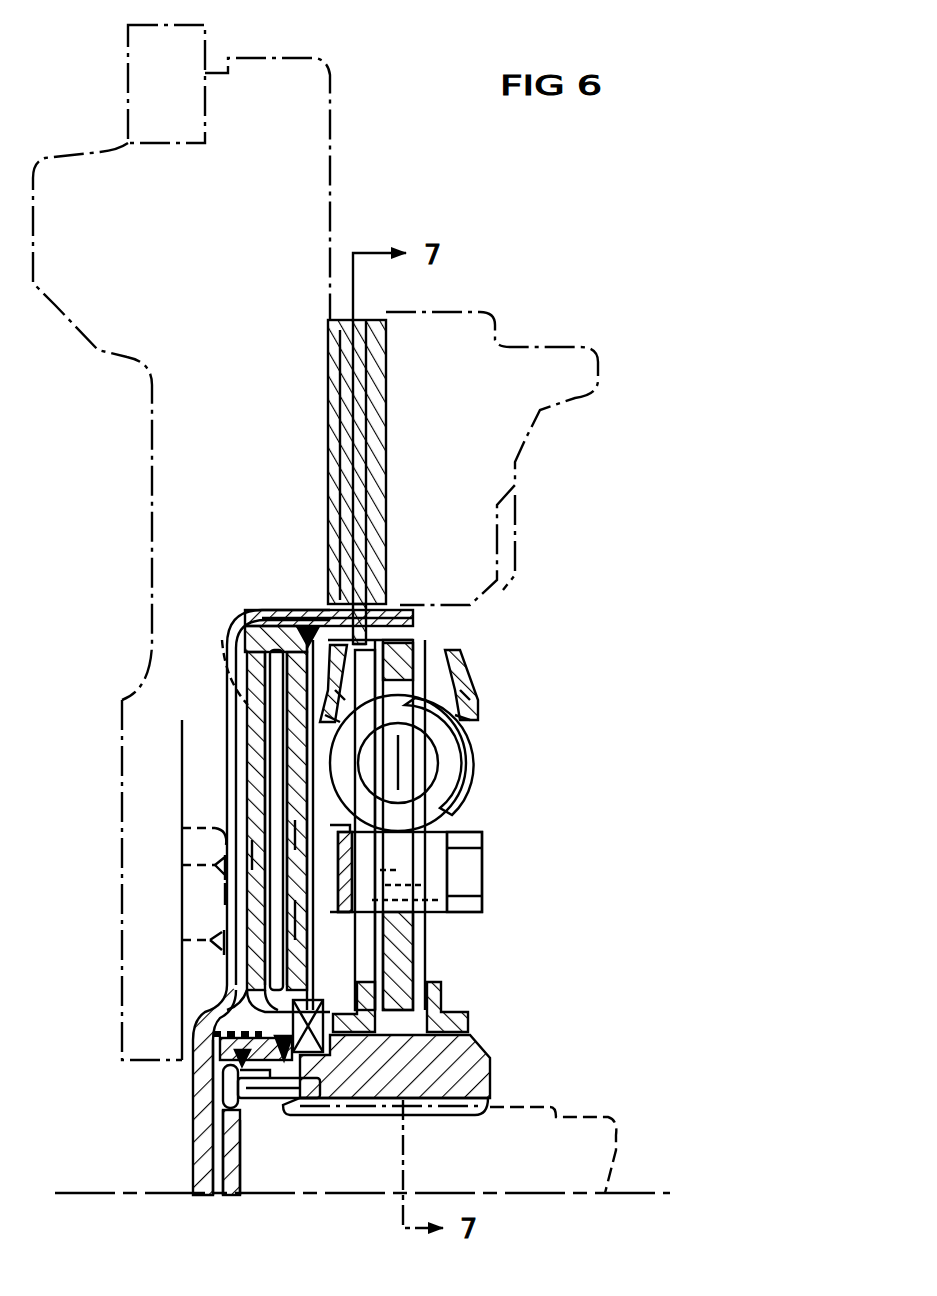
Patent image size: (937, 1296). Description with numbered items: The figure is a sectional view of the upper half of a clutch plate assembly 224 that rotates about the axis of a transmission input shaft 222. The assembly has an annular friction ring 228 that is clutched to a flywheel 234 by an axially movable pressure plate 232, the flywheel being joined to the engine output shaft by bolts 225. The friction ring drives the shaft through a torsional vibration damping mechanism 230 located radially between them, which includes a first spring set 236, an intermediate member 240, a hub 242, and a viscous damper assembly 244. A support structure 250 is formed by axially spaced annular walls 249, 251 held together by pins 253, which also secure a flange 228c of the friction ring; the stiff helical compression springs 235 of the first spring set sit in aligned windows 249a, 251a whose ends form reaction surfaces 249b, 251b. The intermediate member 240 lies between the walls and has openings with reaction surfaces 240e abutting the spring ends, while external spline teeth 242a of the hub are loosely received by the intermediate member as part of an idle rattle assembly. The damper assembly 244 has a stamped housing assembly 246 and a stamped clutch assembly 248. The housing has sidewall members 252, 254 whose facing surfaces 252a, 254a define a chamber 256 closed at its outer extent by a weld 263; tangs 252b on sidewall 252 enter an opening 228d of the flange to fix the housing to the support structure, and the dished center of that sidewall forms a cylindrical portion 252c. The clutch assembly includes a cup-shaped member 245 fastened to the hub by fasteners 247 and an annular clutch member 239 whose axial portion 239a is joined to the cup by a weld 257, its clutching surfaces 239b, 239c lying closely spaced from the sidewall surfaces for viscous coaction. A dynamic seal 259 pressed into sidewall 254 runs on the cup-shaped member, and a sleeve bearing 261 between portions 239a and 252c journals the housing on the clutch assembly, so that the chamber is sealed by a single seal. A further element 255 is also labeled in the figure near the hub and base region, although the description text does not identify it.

The transmission input shaft 222 is at (598, 1116).
The clutch plate assembly 224 is at (600, 626).
The bolts 225 is at (185, 962).
The friction ring 228 is at (322, 343).
The flange of friction ring 228c is at (345, 383).
The opening of friction ring flange 228d is at (332, 640).
The torsional vibration damping mechanism 230 is at (597, 704).
The pressure plate 232 is at (520, 347).
The flywheel 234 is at (332, 75).
The helical compression springs 235 is at (462, 793).
The first spring stage or spring set 236 is at (475, 783).
The annular clutch member 239 is at (250, 915).
The axially extending portion of clutch member 239a is at (245, 1053).
The clutching surface 239b is at (250, 915).
The clutching surface 239c is at (245, 830).
The intermediate member 240 is at (416, 938).
The reaction surface 240e is at (400, 762).
The hub 242 is at (492, 1078).
The external spline teeth 242a is at (425, 998).
The viscous damper assembly 244 is at (230, 763).
The central cup-shaped member 245 is at (262, 1190).
The housing assembly 246 is at (242, 742).
The fasteners 247 is at (213, 1110).
The clutch assembly 248 is at (245, 788).
The annular plate or wall 249 is at (300, 632).
The window 249a is at (330, 732).
The reaction surface 249b is at (345, 705).
The support structure 250 is at (398, 596).
The annular plate or wall 251 is at (462, 670).
The window 251a is at (452, 716).
The reaction surface 251b is at (476, 694).
The first sidewall member 252 is at (245, 800).
The sidewall clutching surface 252a is at (250, 856).
The tangs 252b is at (415, 618).
The cylindrical portion 252c is at (240, 998).
The pins 253 is at (485, 894).
The second sidewall member 254 is at (380, 864).
The sidewall clutching surface 254a is at (250, 885).
The seal plate 255 is at (470, 1023).
The chamber 256 is at (350, 665).
The weld 257 is at (238, 1078).
The dynamic seal 259 is at (360, 1000).
The sleeve bearing 261 is at (222, 1038).
The weld 263 is at (308, 626).